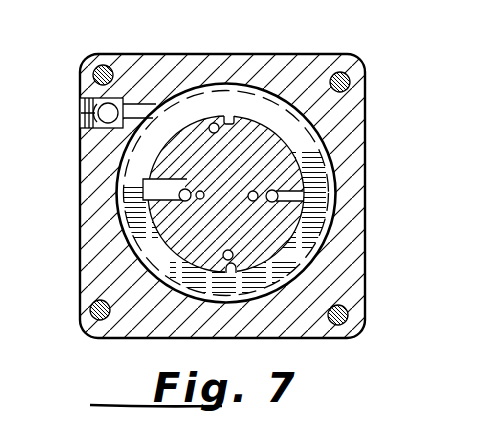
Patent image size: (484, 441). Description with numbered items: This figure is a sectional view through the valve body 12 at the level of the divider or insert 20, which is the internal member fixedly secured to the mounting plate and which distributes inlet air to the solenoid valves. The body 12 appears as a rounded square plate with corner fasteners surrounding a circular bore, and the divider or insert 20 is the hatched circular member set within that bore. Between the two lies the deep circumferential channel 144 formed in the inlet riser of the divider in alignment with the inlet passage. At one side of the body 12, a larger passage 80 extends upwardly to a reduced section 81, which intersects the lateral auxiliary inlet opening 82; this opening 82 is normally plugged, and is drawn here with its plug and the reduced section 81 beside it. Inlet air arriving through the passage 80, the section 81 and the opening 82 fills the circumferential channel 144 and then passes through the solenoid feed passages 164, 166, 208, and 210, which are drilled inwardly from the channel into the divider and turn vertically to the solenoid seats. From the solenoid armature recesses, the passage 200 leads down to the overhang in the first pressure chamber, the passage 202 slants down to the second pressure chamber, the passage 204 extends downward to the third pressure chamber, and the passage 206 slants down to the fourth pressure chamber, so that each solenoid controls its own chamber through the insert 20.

The housing body 12 is at (368, 281).
The divider or insert 20 is at (252, 158).
The larger passage 80 is at (475, 164).
The reduced section 81 is at (87, 132).
The lateral auxiliary inlet opening 82 is at (88, 113).
The circumferential channel 144 is at (276, 112).
The solenoid feed passage 164 is at (295, 198).
The solenoid feed passage 166 is at (150, 197).
The passage 200 is at (143, 186).
The passage 202 is at (282, 182).
The passage 204 is at (223, 257).
The passage 206 is at (213, 123).
The solenoid feed passage 208 is at (233, 273).
The solenoid feed passage 210 is at (231, 115).